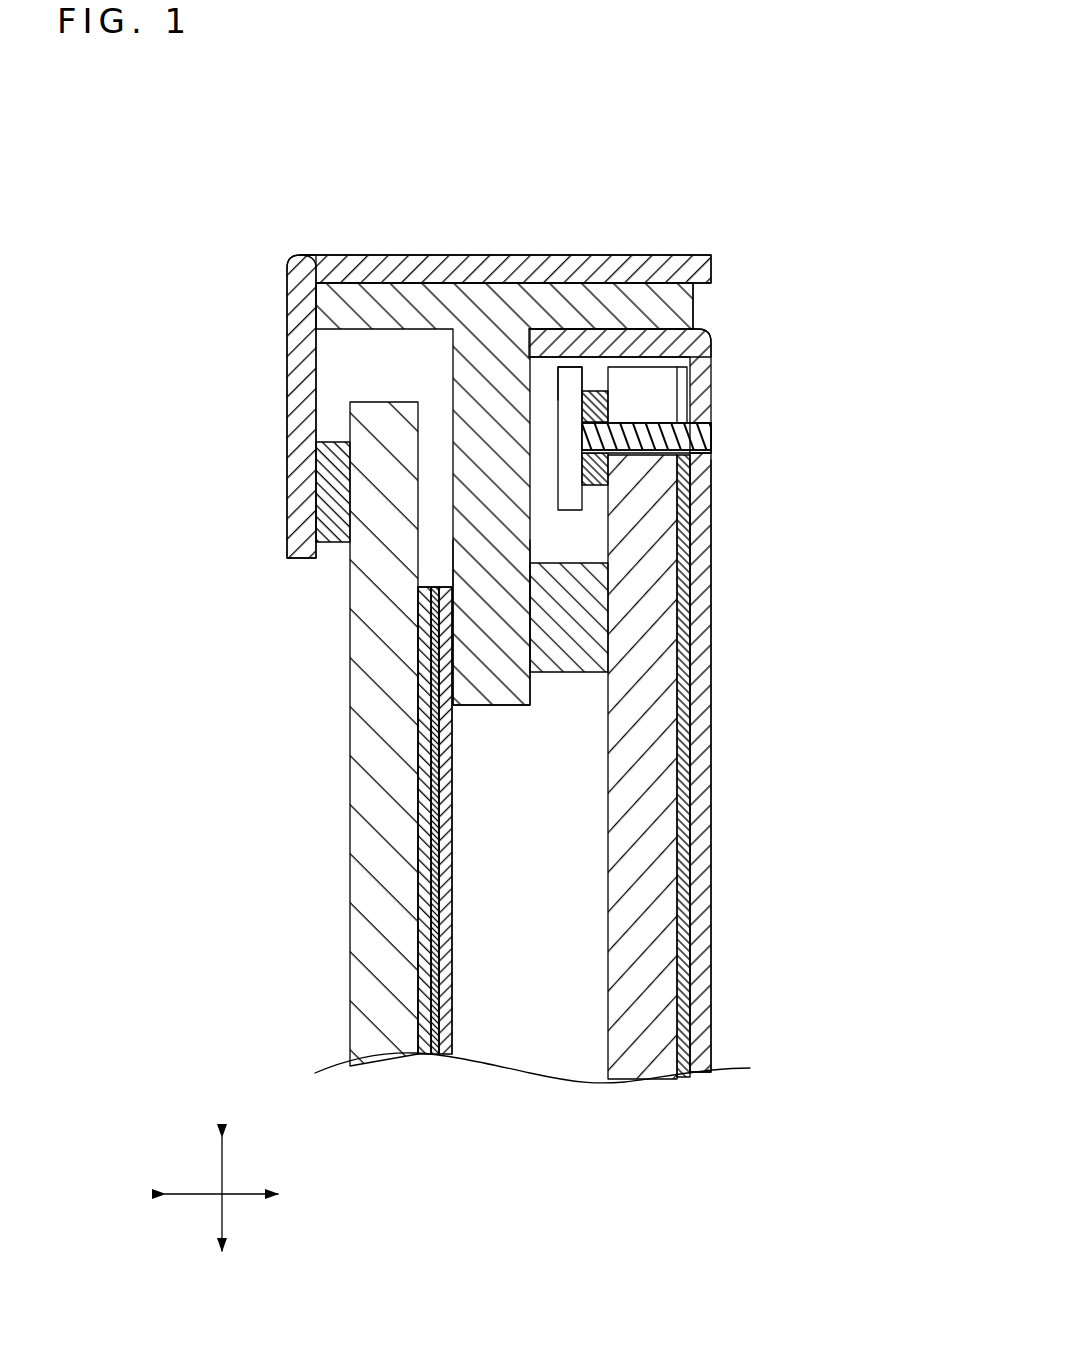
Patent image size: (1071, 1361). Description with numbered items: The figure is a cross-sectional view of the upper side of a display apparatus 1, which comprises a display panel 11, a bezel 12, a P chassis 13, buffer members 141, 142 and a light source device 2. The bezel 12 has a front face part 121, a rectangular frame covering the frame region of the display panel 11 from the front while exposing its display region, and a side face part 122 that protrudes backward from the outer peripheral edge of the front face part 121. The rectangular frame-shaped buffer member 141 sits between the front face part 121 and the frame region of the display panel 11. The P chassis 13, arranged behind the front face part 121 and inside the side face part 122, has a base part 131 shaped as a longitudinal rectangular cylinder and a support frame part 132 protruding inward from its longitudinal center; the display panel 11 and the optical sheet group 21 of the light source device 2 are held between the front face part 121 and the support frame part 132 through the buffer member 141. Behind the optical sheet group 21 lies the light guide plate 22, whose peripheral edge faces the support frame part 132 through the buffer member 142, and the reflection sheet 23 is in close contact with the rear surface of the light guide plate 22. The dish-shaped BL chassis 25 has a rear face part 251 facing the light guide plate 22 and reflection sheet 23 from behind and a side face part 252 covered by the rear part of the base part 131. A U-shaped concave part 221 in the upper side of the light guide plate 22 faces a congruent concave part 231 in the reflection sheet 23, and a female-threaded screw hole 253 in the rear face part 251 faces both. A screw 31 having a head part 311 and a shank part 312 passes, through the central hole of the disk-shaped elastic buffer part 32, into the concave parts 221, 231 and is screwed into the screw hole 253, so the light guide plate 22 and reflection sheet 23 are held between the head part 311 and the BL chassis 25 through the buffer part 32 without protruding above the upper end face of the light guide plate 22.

The display apparatus 1 is at (738, 128).
The display panel 11 is at (365, 876).
The bezel 12 is at (190, 175).
The front face part 121 is at (293, 326).
The side face part 122 is at (360, 262).
The P chassis 13 is at (493, 405).
The base part 131 is at (650, 298).
The support frame part 132 is at (467, 565).
The buffer member 141 is at (338, 452).
The buffer member 142 is at (562, 658).
The light source device 2 is at (529, 1090).
The optical sheet group 21 is at (433, 1056).
The light guide plate 22 is at (643, 1090).
The reflection sheet 23 is at (682, 1087).
The BL chassis 25 is at (704, 1084).
The rear face part 251 is at (702, 583).
The side face part 252 is at (668, 327).
The screw hole 253 is at (708, 447).
The concave part 221 is at (652, 428).
The concave part 231 is at (690, 437).
The screw 31 is at (553, 390).
The head part 311 is at (570, 377).
The shank part 312 is at (623, 428).
The buffer part 32 is at (592, 390).